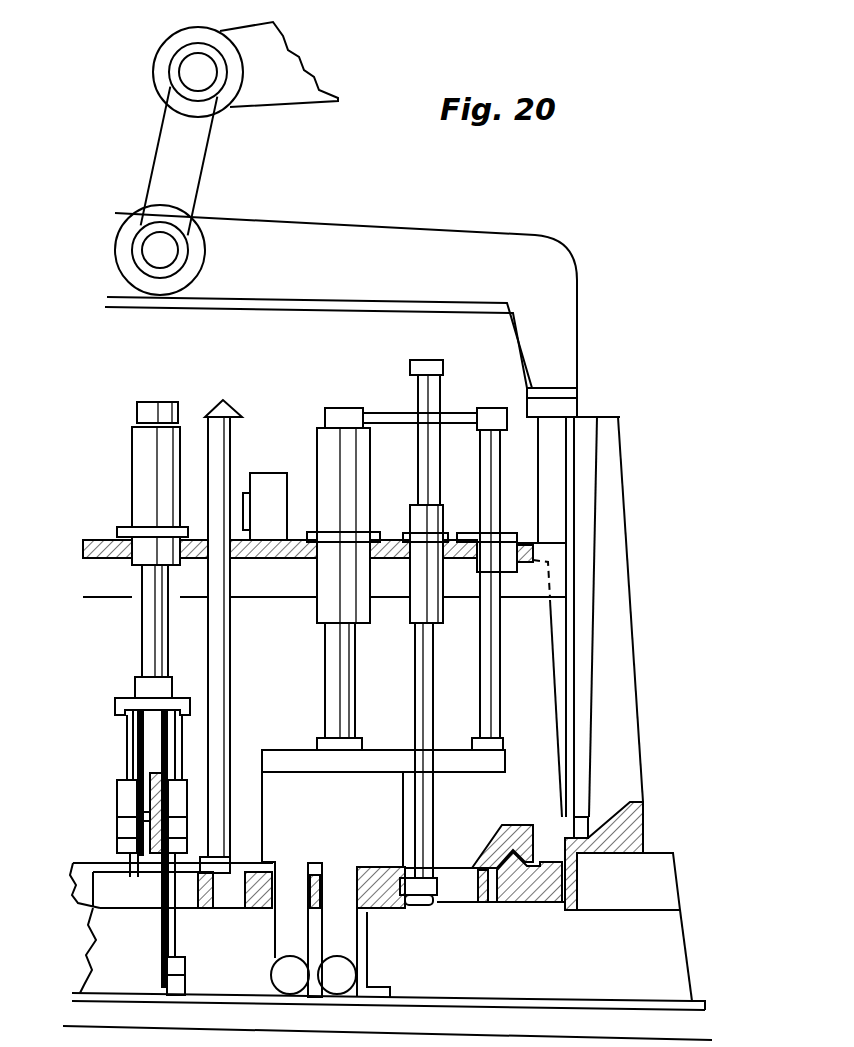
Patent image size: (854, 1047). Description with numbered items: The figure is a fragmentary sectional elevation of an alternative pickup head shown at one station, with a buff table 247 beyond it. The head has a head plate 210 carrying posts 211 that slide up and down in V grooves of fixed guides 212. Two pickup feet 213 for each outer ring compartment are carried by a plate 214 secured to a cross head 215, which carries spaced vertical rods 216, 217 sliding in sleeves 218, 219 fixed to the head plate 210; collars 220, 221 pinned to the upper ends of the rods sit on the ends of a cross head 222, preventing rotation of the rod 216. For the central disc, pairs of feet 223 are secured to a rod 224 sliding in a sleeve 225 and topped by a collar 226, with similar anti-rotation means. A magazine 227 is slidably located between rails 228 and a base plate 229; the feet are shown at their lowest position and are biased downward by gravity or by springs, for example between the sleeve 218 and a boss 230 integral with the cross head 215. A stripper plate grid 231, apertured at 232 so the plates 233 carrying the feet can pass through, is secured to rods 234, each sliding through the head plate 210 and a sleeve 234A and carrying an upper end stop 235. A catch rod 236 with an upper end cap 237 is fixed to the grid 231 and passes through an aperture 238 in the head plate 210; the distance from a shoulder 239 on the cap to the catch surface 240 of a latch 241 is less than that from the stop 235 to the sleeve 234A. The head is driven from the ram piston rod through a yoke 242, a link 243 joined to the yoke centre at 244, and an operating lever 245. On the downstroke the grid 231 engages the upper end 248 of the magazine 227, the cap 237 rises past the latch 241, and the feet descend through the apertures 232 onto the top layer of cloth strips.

The head plate 210 is at (530, 548).
The posts 211 is at (555, 453).
The fixed guides 212 is at (583, 635).
The pickup feet 213 is at (290, 994).
The plate 214 is at (262, 824).
The cross head 215 is at (455, 763).
The vertical rod 216 is at (355, 686).
The vertical rod 217 is at (500, 685).
The sleeve 218 is at (370, 484).
The sleeve 219 is at (517, 598).
The collar 220 is at (338, 408).
The collar 221 is at (484, 407).
The cross head 222 is at (387, 413).
The feet 223 is at (172, 997).
The rod 224 is at (168, 640).
The sleeve 225 is at (131, 479).
The collar 226 is at (176, 405).
The magazine 227 is at (373, 943).
The rails 228 is at (520, 890).
The base plate 229 is at (503, 1007).
The boss 230 is at (355, 740).
The stripper plate grid 231 is at (255, 910).
The apertures 232 is at (322, 890).
The plates 233 is at (283, 945).
The rods 234 is at (433, 713).
The sleeve 234A is at (443, 624).
The upper end stop 235 is at (441, 366).
The catch rod 236 is at (232, 665).
The upper end cap 237 is at (233, 410).
The aperture 238 is at (233, 565).
The shoulder 239 is at (238, 419).
The catch surface 240 is at (248, 524).
The latch 241 is at (250, 520).
The yoke 242 is at (568, 313).
The link 243 is at (195, 158).
The yoke centre connection 244 is at (165, 255).
The operating lever 245 is at (285, 107).
The buff table 247 is at (518, 824).
The upper end of magazine 248 is at (383, 910).